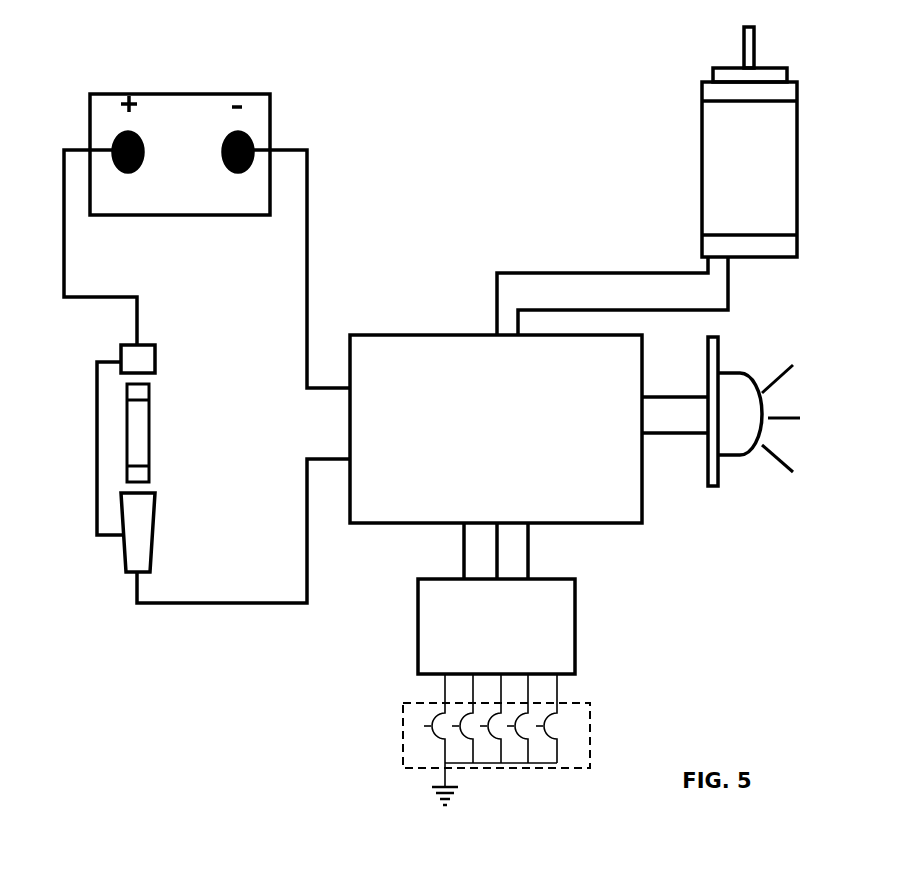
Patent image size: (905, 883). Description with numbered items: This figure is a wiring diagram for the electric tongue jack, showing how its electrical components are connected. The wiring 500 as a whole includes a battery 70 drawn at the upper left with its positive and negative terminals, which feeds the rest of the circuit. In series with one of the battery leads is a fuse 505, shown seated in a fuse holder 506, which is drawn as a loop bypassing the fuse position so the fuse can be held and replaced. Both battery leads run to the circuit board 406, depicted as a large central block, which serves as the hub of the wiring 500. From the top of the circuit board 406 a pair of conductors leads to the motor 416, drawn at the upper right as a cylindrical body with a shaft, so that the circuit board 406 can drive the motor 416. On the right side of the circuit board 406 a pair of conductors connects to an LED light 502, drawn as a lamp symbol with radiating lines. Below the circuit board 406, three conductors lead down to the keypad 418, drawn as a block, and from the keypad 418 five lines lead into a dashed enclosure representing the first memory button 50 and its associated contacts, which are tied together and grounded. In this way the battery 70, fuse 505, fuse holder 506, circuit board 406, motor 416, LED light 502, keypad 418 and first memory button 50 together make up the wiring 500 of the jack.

The wiring 500 is at (475, 107).
The battery 70 is at (180, 154).
The fuse 505 is at (136, 441).
The fuse holder 506 is at (97, 445).
The circuit board 406 is at (496, 429).
The motor 416 is at (647, 181).
The LED light 502 is at (725, 409).
The keypad 418 is at (428, 743).
The first memory button 50 is at (577, 743).